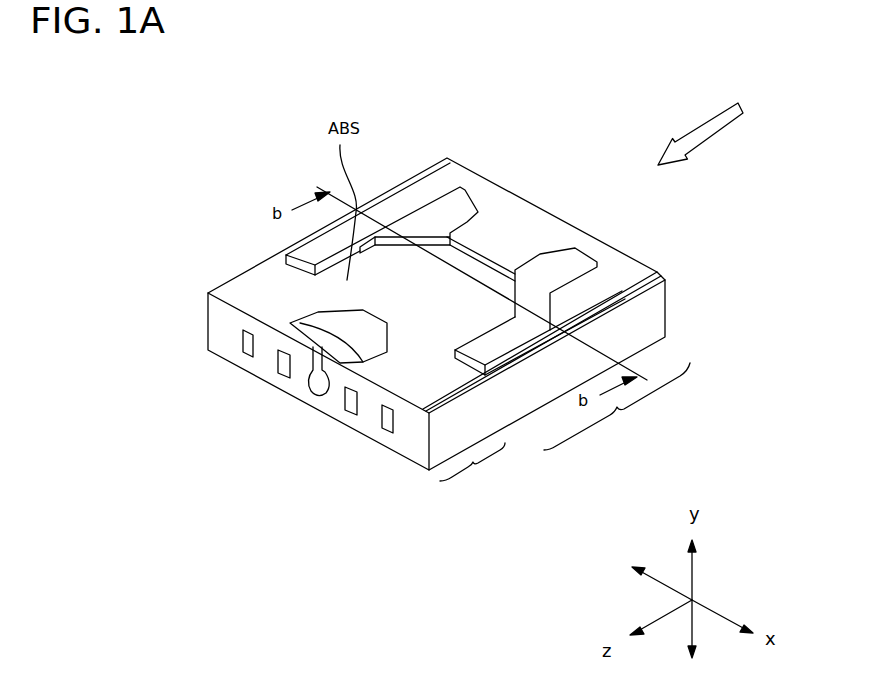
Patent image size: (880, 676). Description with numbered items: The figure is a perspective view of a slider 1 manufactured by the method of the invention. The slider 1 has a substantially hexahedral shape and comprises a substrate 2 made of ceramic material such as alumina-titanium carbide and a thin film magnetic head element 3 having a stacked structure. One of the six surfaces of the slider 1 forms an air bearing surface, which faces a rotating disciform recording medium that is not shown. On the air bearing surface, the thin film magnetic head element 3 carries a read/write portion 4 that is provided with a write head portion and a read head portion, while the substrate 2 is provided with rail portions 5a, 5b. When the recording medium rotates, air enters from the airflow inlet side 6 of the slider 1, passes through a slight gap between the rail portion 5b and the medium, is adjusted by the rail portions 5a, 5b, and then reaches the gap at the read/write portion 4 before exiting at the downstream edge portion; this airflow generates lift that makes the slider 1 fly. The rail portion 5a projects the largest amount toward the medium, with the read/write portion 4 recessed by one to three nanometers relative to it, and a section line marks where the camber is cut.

The slider 1 is at (284, 195).
The substrate 2 is at (617, 406).
The thin film magnetic head element 3 is at (472, 469).
The read/write portion 4 is at (290, 326).
The rail portion 5a is at (472, 190).
The rail portion 5b is at (492, 190).
The airflow inlet side 6 is at (691, 131).